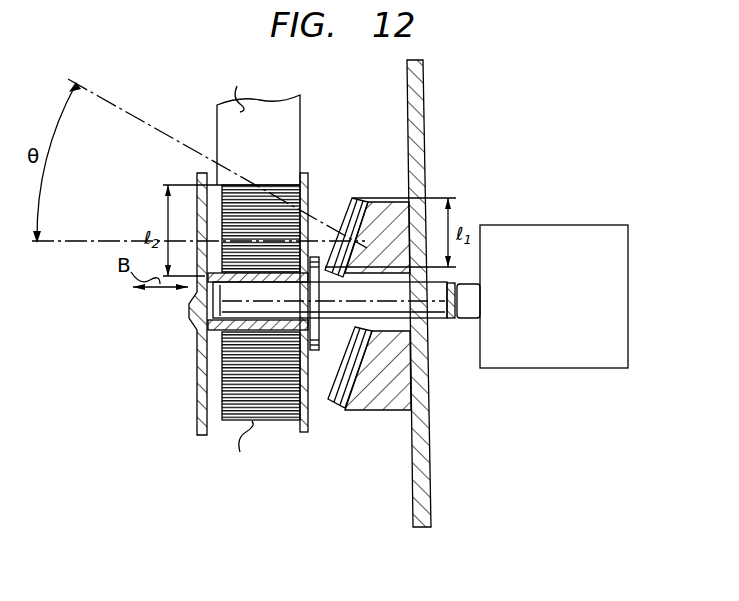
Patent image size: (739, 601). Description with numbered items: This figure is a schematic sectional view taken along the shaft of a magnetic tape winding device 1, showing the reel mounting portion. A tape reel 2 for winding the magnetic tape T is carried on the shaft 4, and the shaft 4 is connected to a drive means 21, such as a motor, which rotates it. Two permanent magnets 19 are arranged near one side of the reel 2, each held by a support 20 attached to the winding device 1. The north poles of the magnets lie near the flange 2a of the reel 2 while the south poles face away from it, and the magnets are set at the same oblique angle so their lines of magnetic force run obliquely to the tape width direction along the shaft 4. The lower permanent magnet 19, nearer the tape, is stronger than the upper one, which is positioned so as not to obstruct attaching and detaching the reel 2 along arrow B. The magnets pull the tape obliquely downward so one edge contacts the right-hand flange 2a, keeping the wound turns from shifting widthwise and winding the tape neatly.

The winding device 1 is at (431, 420).
The reel 2 is at (186, 378).
The flange 2a is at (304, 426).
The shaft 4 is at (437, 322).
The permanent magnet 19 is at (352, 204).
The support 20 is at (384, 216).
The drive means 21 is at (588, 225).